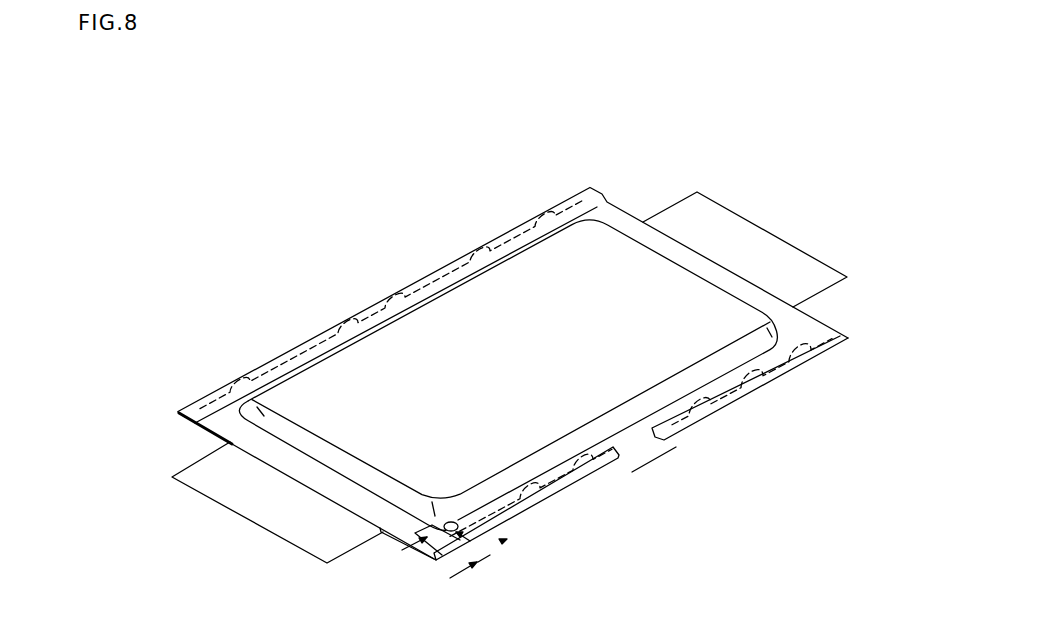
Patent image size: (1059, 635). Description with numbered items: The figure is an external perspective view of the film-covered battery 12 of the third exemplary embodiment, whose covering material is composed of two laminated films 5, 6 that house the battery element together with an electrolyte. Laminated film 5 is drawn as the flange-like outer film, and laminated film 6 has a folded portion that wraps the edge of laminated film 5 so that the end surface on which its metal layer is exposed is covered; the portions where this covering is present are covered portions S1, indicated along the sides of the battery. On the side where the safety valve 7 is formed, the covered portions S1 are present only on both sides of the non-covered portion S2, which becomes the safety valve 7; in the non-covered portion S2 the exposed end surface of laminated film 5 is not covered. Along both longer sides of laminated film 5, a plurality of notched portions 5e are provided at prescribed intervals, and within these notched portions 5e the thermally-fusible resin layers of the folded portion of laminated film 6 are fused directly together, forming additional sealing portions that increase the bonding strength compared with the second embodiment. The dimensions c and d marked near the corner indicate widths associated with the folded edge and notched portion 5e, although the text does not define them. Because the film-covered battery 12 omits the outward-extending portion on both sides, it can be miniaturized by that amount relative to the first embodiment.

The film-covered battery 12 is at (632, 62).
The laminated film 5 is at (219, 392).
The notched portions 5e is at (575, 476).
The laminated film 6 is at (180, 416).
The safety valve 7 is at (641, 440).
The covered portion S1 is at (323, 337).
The non-covered portion S2 is at (654, 474).
The dimension c is at (507, 539).
The dimension d is at (436, 566).